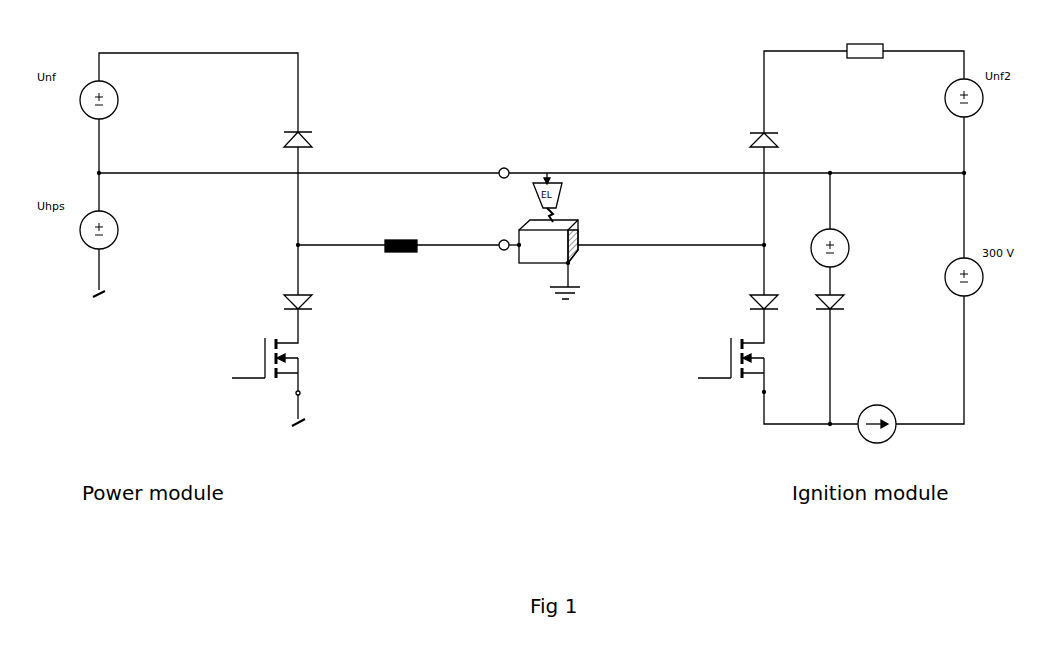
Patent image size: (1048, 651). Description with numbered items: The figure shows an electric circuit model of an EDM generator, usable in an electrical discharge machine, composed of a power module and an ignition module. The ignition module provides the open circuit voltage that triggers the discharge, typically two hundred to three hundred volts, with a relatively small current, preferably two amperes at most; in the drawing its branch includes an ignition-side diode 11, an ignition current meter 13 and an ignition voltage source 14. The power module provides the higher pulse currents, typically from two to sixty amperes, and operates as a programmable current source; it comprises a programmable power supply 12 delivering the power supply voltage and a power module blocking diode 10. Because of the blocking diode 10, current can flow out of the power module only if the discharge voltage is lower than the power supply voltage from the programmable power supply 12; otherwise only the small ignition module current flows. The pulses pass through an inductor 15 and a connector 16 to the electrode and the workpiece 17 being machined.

The power module blocking diode 10 is at (318, 303).
The diode of ignition module 11 is at (750, 303).
The programmable power supply 12 is at (116, 230).
The ignition current meter Izünd 13 is at (877, 424).
The ignition voltage source Uzünd 14 is at (847, 240).
The inductor L1 15 is at (401, 250).
The connector 16 is at (529, 158).
The workpiece 17 is at (549, 276).